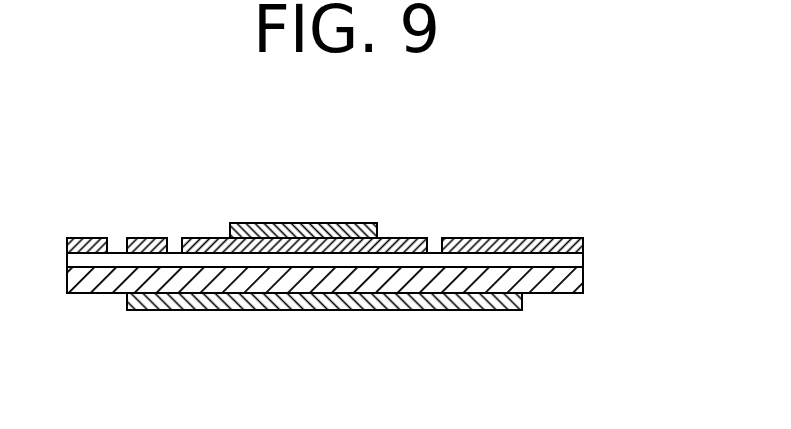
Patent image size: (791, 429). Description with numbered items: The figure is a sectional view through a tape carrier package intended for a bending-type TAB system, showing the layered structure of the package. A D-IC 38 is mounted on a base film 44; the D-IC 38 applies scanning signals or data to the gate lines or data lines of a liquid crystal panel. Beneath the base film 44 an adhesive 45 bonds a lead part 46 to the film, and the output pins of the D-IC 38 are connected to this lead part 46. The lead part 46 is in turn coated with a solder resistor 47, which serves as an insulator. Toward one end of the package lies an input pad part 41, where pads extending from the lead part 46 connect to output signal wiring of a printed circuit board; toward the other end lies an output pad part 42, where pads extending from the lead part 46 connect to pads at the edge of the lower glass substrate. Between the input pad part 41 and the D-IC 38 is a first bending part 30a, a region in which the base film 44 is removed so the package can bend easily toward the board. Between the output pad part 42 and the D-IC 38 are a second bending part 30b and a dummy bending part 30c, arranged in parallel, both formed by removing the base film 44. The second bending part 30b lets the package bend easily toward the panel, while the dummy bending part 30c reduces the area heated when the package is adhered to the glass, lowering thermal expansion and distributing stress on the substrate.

The first bending part 30a is at (432, 247).
The second bending part 30b is at (175, 247).
The dummy bending part 30c is at (112, 243).
The D-IC 38 is at (311, 222).
The input pad part 41 is at (553, 295).
The output pad part 42 is at (80, 294).
The base film 44 is at (583, 243).
The adhesive 45 is at (583, 258).
The lead part 46 is at (583, 282).
The solder resistor 47 is at (423, 311).